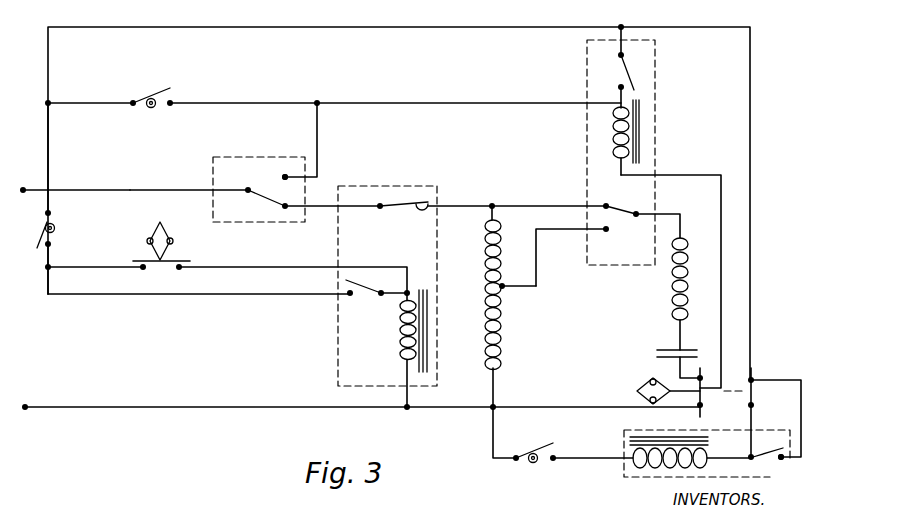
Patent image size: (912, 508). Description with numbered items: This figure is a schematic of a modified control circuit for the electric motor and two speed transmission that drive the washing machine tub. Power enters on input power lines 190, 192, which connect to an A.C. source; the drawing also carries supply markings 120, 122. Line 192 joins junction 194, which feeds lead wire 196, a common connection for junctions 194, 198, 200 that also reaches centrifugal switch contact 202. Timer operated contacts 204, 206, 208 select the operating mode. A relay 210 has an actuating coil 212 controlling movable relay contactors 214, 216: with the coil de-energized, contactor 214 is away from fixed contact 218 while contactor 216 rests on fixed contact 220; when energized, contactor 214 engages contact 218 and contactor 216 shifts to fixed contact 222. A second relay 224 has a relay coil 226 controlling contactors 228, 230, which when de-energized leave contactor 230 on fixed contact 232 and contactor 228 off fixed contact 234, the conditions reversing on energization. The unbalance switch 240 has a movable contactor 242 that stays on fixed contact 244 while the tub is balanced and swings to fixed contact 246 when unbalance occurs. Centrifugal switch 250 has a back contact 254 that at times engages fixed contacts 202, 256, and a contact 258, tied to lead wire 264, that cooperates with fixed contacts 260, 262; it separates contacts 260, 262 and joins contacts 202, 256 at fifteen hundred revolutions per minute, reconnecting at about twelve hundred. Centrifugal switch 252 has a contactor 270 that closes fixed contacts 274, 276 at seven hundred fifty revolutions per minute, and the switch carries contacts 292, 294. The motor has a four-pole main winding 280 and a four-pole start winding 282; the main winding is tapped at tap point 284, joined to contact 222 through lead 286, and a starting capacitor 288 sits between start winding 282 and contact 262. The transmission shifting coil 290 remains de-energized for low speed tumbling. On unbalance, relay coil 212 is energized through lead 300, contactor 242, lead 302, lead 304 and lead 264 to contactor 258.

The power supply line 120 is at (696, 0).
The power supply line 122 is at (775, 0).
The input power line 190 is at (60, 409).
The input power line 192 is at (23, 188).
The junction 194 is at (50, 188).
The lead wire 196 is at (200, 28).
The junction 198 is at (48, 100).
The junction 200 is at (618, 28).
The centrifugal switch contact 202 is at (751, 378).
The timer operated contact 204 is at (171, 100).
The timer operated contact 206 is at (517, 456).
The timer operated contact 208 is at (51, 213).
The relay 210 is at (640, 90).
The actuating coil 212 is at (630, 143).
The movable relay contactor 214 is at (626, 68).
The movable relay contactor 216 is at (620, 212).
The fixed contact 218 is at (618, 87).
The fixed contact 220 is at (608, 204).
The fixed contact 222 is at (604, 232).
The second relay 224 is at (413, 247).
The relay coil 226 is at (417, 327).
The movable contactor 228 is at (360, 266).
The movable contactor 230 is at (414, 203).
The fixed contact 232 is at (428, 203).
The fixed contact 234 is at (350, 296).
The unbalance switch 240 is at (250, 170).
The movable contactor 242 is at (250, 192).
The fixed contact 244 is at (285, 209).
The fixed contact 246 is at (285, 177).
The centrifugal switch 250 is at (725, 378).
The centrifugal switch 252 is at (207, 219).
The back contact 254 is at (753, 379).
The fixed contact 256 is at (753, 405).
The contact 258 is at (702, 377).
The fixed contact 260 is at (698, 407).
The fixed contact 262 is at (696, 377).
The lead wire 264 is at (721, 257).
The contactor 270 is at (170, 263).
The fixed contact 274 is at (181, 268).
The fixed contact 276 is at (130, 266).
The main winding 280 is at (502, 347).
The start winding 282 is at (672, 292).
The tap point 284 is at (503, 288).
The lead 286 is at (536, 262).
The starting capacitor 288 is at (684, 328).
The transmission shifting coil 290 is at (657, 462).
The switch arm 292 is at (771, 452).
The contact 294 is at (783, 448).
The lead 300 is at (133, 189).
The lead 302 is at (318, 122).
The lead 304 is at (432, 100).